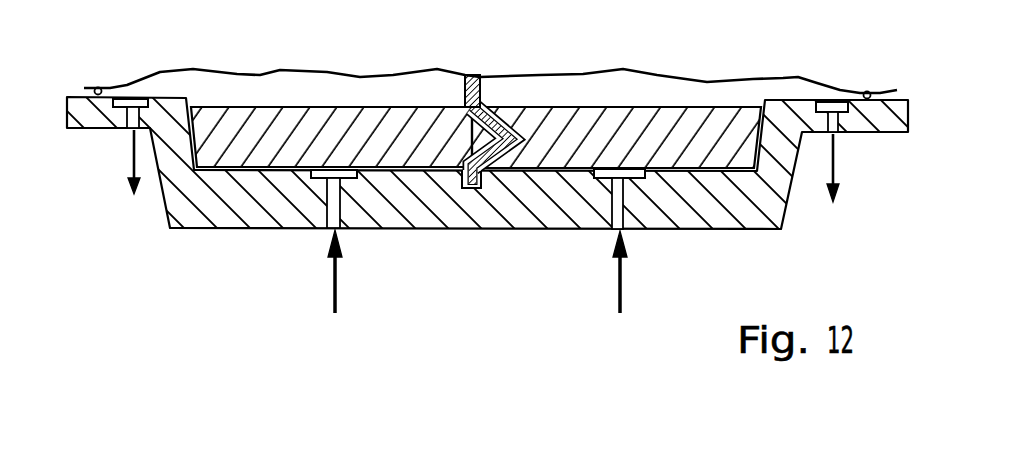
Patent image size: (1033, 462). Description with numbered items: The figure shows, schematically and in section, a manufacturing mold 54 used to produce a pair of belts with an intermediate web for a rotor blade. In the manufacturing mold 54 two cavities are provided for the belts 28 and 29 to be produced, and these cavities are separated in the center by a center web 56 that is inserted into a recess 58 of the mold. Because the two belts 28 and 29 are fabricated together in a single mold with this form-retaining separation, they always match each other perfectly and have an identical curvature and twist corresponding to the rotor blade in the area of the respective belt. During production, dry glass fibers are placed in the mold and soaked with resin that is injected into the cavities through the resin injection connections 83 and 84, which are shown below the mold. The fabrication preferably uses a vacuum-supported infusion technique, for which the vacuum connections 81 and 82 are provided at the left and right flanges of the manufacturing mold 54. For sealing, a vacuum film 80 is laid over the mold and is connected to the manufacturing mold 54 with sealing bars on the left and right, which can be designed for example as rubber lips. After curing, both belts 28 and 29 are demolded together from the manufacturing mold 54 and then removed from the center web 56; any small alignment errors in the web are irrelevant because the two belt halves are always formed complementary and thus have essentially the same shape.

The belt 28 is at (261, 133).
The belt 29 is at (582, 130).
The manufacturing mold 54 is at (727, 200).
The center web 56 is at (473, 75).
The recess 58 is at (457, 193).
The vacuum film 80 is at (795, 77).
The vacuum connection 81 is at (127, 112).
The vacuum connection 82 is at (838, 120).
The resin injection connection 83 is at (327, 197).
The resin injection connection 84 is at (611, 207).